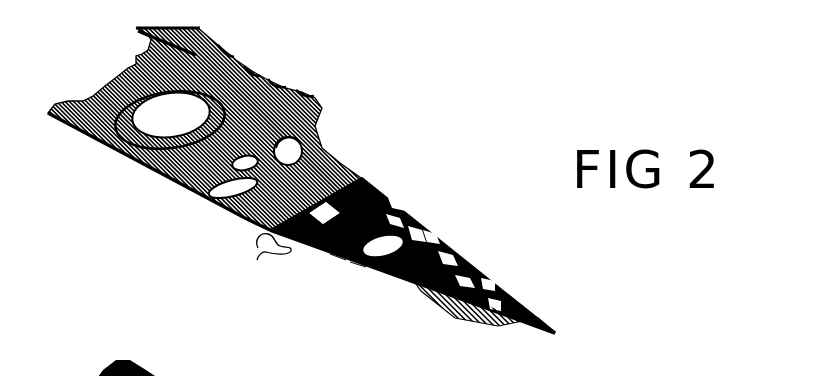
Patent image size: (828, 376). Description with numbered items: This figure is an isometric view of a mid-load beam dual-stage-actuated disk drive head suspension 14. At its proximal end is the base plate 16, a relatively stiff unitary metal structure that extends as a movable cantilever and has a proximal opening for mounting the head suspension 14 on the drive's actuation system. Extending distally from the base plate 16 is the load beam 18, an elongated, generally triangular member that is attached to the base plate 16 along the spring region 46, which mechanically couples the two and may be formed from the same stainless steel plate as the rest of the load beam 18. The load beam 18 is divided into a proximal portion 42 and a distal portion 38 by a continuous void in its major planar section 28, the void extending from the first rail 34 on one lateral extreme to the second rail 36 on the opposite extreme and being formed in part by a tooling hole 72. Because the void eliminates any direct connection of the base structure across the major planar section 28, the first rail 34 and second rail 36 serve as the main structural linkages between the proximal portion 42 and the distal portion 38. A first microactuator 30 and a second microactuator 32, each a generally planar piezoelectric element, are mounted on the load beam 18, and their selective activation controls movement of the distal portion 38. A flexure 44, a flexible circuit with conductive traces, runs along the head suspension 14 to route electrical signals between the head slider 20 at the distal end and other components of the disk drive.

The head suspension 14 is at (237, 288).
The base plate 16 is at (127, 153).
The load beam 18 is at (357, 190).
The head slider 20 is at (487, 320).
The major planar section 28 is at (376, 203).
The first microactuator 30 is at (330, 250).
The second microactuator 32 is at (386, 205).
The first rail 34 is at (350, 258).
The second rail 36 is at (440, 236).
The distal portion 38 is at (418, 223).
The proximal portion 42 is at (318, 212).
The flexure 44 is at (443, 310).
The spring region 46 is at (252, 243).
The tooling hole 72 is at (393, 225).